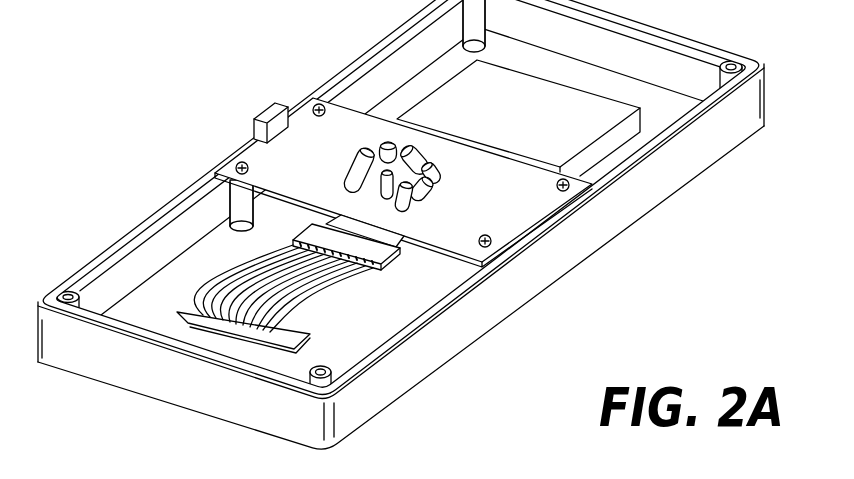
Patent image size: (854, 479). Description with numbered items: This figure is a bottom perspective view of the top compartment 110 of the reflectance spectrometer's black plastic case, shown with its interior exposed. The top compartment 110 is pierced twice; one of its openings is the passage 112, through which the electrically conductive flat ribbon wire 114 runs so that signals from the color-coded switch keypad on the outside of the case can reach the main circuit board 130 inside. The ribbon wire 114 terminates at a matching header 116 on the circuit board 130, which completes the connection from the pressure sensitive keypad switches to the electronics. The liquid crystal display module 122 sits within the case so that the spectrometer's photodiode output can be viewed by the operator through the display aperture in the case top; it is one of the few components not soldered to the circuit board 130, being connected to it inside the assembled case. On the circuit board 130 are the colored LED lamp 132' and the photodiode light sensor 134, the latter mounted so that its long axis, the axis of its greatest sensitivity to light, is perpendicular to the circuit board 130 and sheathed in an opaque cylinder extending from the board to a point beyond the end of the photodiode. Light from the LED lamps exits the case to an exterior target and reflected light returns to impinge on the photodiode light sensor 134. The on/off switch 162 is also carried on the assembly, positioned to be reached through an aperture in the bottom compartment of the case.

The top compartment 110 is at (430, 396).
The passage aperture 112 is at (195, 315).
The flat ribbon wire 114 is at (196, 282).
The matching header 116 is at (373, 270).
The liquid crystal display module 122 is at (577, 124).
The main circuit board 130 is at (500, 224).
The colored LED lamp 132' is at (476, 184).
The photodiode light sensor 134 is at (405, 152).
The on/off switch 162 is at (253, 113).